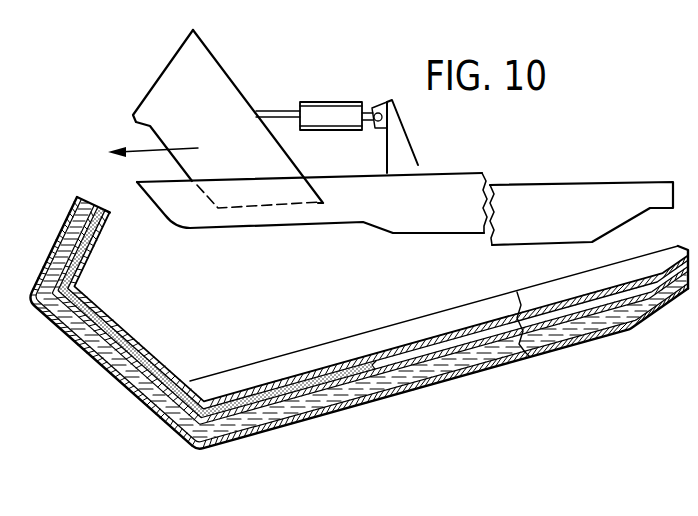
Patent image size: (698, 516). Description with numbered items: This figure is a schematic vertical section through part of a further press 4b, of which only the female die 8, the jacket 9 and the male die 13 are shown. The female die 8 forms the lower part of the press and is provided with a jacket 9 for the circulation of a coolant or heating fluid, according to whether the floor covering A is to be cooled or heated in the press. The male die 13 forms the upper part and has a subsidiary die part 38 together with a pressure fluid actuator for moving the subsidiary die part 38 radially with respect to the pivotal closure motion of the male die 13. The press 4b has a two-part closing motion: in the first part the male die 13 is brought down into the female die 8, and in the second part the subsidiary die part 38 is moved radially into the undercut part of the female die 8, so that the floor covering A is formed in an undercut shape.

The subsidiary die part 38 is at (217, 87).
The male die 13 is at (362, 190).
The press 4b is at (517, 180).
The female die 8 is at (100, 360).
The jacket 9 is at (120, 380).
The floor covering A is at (170, 404).